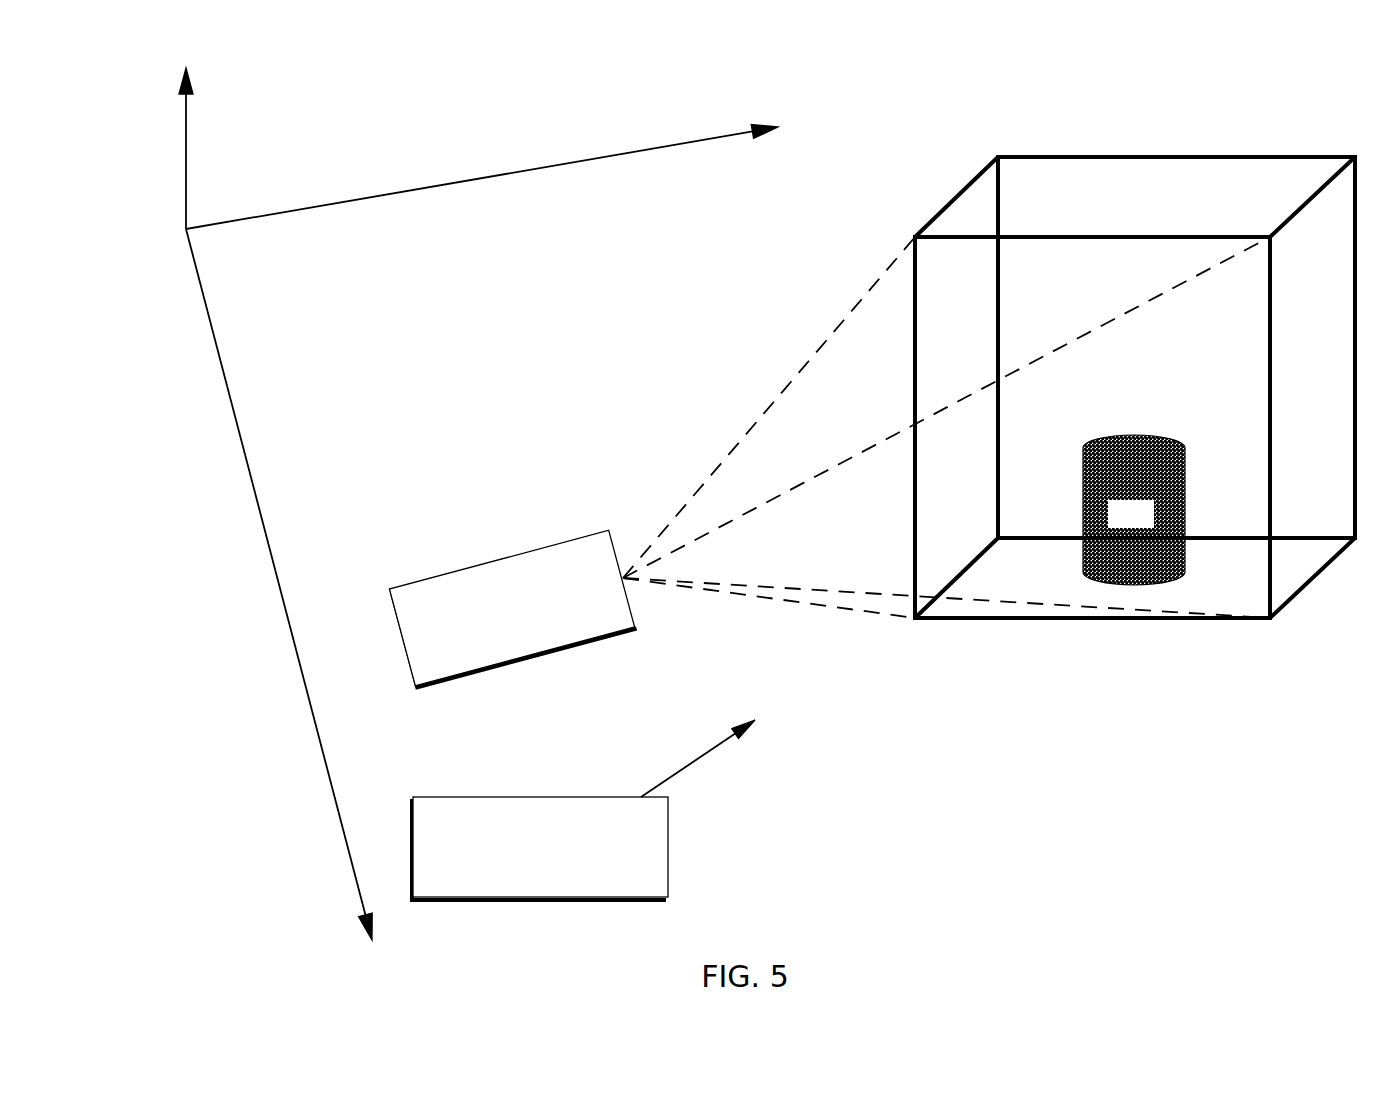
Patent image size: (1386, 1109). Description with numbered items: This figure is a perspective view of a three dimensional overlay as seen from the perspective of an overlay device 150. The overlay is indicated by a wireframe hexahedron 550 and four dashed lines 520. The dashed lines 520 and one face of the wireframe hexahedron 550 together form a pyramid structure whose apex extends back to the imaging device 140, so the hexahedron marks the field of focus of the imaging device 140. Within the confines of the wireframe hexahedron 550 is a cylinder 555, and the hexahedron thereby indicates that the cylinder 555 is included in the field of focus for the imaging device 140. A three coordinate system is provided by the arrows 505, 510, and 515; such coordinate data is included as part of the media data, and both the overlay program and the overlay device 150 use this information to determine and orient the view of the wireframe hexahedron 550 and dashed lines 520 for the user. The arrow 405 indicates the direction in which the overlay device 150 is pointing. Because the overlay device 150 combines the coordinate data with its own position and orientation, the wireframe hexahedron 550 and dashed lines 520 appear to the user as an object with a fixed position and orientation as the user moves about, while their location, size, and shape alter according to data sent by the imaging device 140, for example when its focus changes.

The arrow 515 is at (186, 148).
The arrow 505 is at (456, 186).
The arrow 510 is at (313, 718).
The wireframe hexahedron 550 is at (961, 190).
The dashed lines 520 is at (782, 397).
The cylinder 555 is at (1113, 526).
The imaging device 140 is at (512, 609).
The overlay device 150 is at (523, 872).
The arrow 405 is at (694, 762).